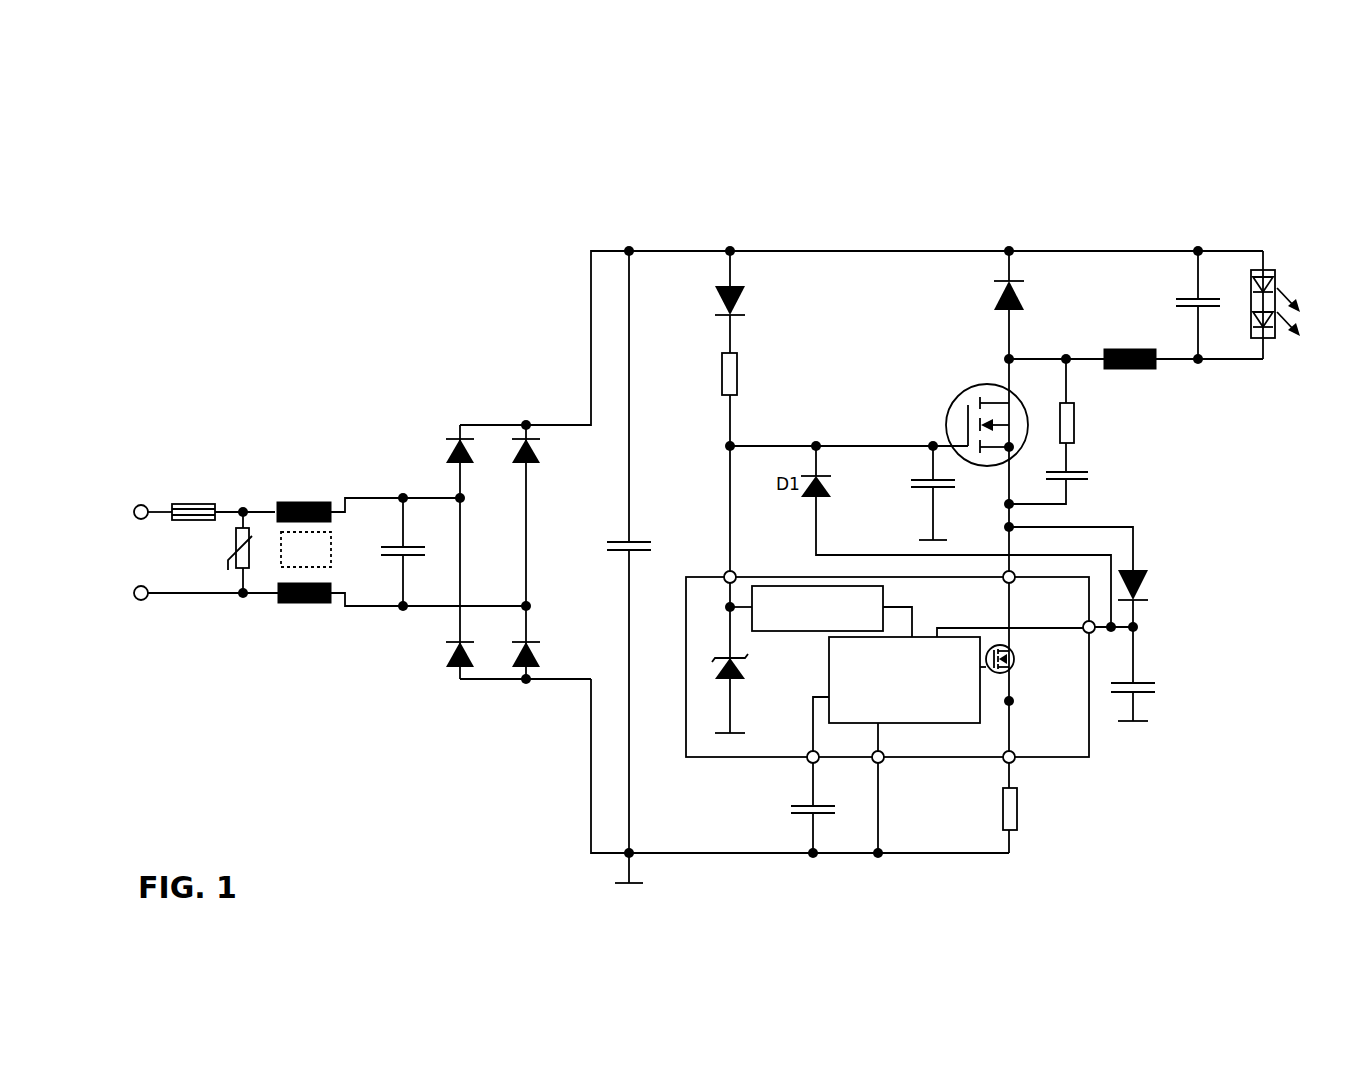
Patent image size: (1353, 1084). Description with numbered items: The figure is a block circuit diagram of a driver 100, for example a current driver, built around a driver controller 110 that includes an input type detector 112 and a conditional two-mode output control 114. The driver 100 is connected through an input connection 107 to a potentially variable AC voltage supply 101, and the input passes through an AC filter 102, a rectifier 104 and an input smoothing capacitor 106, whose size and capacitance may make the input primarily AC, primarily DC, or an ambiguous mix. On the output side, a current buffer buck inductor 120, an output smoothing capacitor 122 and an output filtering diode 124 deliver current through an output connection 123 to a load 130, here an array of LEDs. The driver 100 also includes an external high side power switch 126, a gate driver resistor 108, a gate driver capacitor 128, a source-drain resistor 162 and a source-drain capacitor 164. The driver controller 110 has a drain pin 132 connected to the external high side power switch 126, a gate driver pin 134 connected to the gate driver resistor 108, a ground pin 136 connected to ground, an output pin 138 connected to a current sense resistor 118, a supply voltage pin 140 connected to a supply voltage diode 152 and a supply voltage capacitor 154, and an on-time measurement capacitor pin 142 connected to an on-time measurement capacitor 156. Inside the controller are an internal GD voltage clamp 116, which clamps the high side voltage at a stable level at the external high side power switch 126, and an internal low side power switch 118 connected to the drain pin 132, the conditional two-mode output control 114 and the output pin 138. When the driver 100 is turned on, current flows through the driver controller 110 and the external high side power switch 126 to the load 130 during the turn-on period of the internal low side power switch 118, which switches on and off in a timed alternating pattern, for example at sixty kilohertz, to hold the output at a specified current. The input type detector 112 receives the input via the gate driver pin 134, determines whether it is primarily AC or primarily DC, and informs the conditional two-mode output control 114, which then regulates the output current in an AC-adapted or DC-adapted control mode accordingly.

The driver 100 is at (190, 137).
The AC voltage supply 101 is at (206, 600).
The AC filter 102 is at (347, 468).
The rectifier 104 is at (491, 505).
The input smoothing capacitor 106 is at (624, 564).
The input connection 107 is at (894, 502).
The gate driver resistor 108 is at (752, 348).
The driver controller 110 is at (953, 689).
The input type detector 112 is at (821, 574).
The conditional two-mode output control 114 is at (923, 692).
The internal GD voltage clamp 116 is at (694, 670).
The internal low side power switch 118 is at (1047, 758).
The current buffer buck inductor 120 is at (1136, 375).
The output smoothing capacitor 122 is at (1174, 283).
The output connection 123 is at (1229, 255).
The output filtering diode 124 is at (990, 305).
The external high side power switch 126 is at (879, 468).
The gate driver capacitor 128 is at (920, 493).
The load 130 is at (1279, 259).
The drain pin 132 is at (987, 634).
The gate driver pin 134 is at (709, 529).
The ground pin 136 is at (901, 804).
The output pin 138 is at (981, 784).
The supply voltage pin 140 is at (1061, 605).
The on-time measurement capacitor pin 142 is at (777, 774).
The supply voltage diode 152 is at (1115, 570).
The supply voltage capacitor 154 is at (1160, 671).
The on-time measurement capacitor 156 is at (791, 810).
The source-drain resistor 162 is at (1125, 415).
The source-drain capacitor 164 is at (1097, 471).